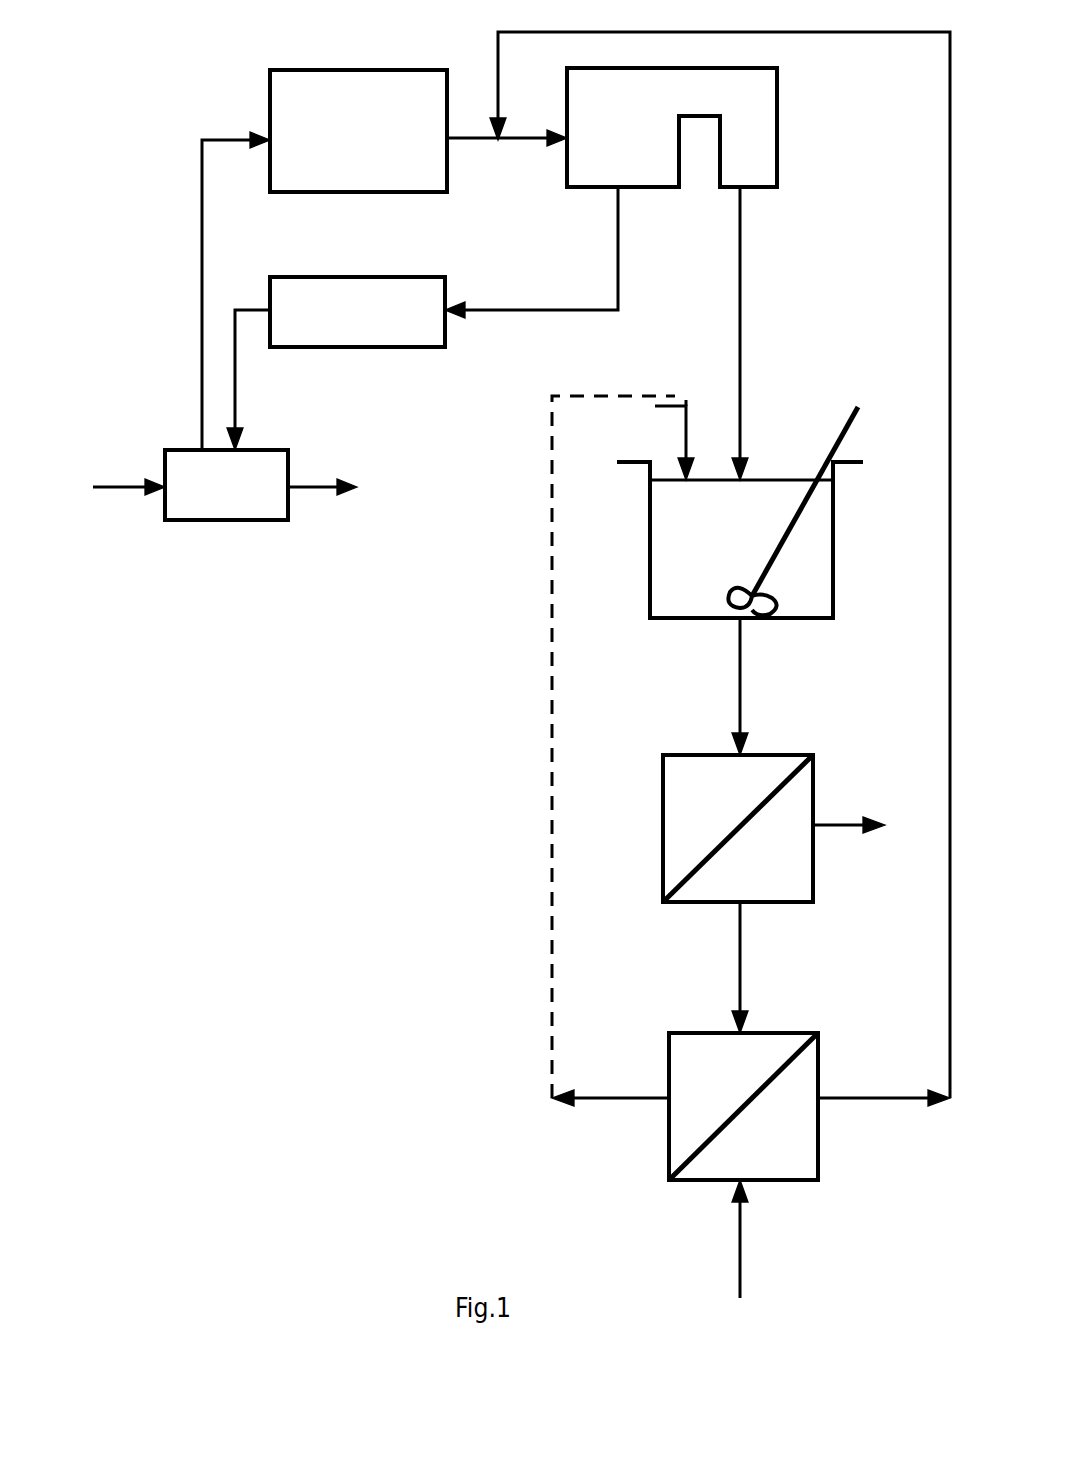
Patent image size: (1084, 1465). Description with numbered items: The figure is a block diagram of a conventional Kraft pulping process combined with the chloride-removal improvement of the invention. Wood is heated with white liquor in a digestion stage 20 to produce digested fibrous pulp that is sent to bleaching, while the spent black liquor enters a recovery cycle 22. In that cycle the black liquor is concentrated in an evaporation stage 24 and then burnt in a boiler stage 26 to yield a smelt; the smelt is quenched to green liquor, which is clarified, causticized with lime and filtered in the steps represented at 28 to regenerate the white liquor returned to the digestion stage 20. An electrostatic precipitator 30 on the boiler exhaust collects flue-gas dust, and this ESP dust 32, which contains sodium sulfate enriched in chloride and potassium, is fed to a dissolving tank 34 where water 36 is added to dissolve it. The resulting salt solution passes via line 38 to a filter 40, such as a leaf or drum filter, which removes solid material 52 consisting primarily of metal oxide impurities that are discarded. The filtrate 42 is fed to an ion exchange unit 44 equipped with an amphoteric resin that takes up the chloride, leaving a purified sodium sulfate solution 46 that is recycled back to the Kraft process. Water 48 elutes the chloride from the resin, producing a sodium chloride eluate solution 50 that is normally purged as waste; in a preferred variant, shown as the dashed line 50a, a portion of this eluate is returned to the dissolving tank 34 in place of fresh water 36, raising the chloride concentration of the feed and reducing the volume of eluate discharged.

The digestion stage 20 is at (200, 520).
The recovery cycle 22 is at (202, 290).
The evaporation stage 24 is at (398, 67).
The boiler stage 26 is at (585, 189).
The causticizing and filtering steps 28 is at (410, 348).
The electrostatic precipitator 30 is at (777, 186).
The ESP dust 32 is at (740, 387).
The dissolving tank 34 is at (833, 590).
The water 36 is at (655, 406).
The line 38 is at (740, 707).
The filter 40 is at (663, 785).
The filtrate 42 is at (740, 935).
The ion exchange unit 44 is at (812, 1075).
The purified sodium sulfate solution 46 is at (888, 1100).
The water 48 is at (740, 1215).
The sodium chloride eluate solution 50 is at (598, 1102).
The eluate recycle line 50a is at (552, 710).
The solid material 52 is at (833, 822).